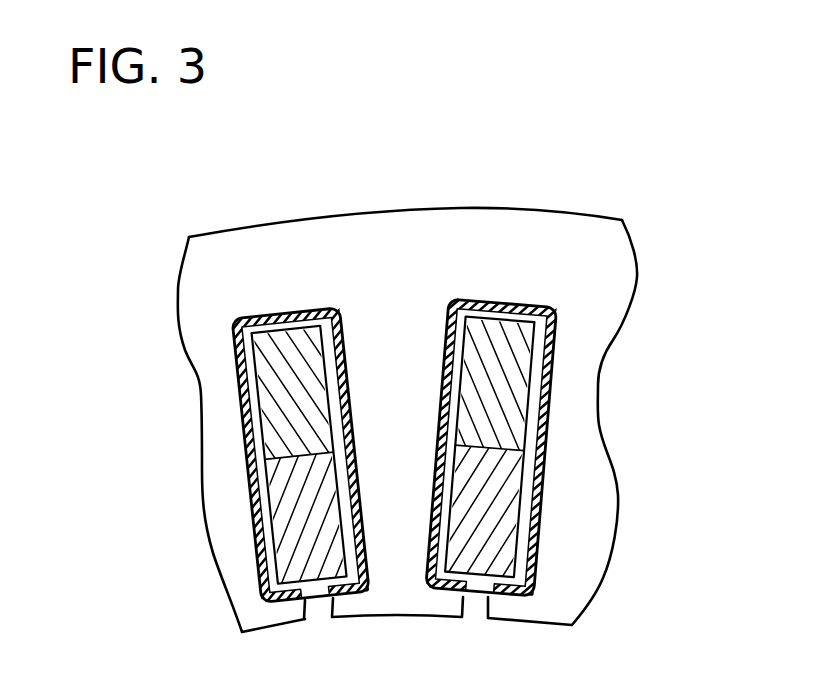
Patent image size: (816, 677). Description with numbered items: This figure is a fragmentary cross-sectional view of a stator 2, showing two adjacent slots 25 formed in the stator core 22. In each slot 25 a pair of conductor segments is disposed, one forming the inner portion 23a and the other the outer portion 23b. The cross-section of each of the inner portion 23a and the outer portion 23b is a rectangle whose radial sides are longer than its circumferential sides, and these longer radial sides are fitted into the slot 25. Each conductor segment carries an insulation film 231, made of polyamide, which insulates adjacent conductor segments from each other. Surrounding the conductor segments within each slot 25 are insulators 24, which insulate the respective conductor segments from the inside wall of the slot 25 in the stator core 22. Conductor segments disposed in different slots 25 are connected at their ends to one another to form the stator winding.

The stator core 2 is at (452, 374).
The stator core 22 is at (437, 248).
The inner portion 23a is at (500, 542).
The outer portion 23b is at (503, 365).
The insulation film 231 is at (515, 493).
The insulator 24 is at (552, 407).
The slot 25 is at (288, 307).